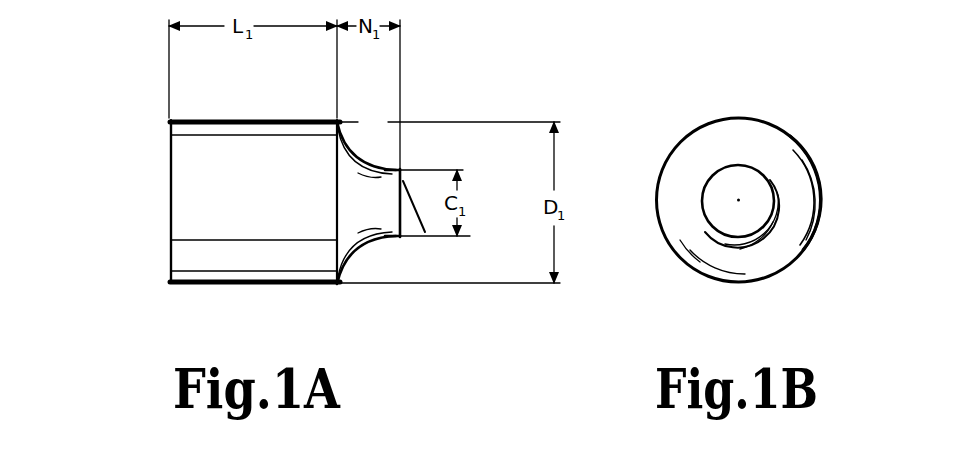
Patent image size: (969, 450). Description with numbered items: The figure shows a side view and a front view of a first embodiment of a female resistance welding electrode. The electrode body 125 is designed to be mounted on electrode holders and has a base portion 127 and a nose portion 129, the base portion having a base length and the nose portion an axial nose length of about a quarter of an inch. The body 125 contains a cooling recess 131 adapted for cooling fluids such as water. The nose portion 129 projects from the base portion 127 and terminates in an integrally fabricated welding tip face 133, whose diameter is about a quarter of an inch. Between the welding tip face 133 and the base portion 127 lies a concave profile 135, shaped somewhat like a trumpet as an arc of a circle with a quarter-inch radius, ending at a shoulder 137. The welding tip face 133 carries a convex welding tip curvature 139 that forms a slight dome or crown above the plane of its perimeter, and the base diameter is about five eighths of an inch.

In FIG. 1A, the electrode body 125 is at (253, 292).
In FIG. 1B, the electrode body 125 is at (765, 110).
In FIG. 1A, the base portion 127 is at (290, 130).
In FIG. 1A, the nose portion 129 is at (365, 160).
In FIG. 1B, the nose portion 129 is at (797, 250).
In FIG. 1A, the cooling recess 131 is at (162, 257).
In FIG. 1A, the welding tip face 133 is at (432, 237).
In FIG. 1B, the welding tip face 133 is at (737, 242).
In FIG. 1A, the concave profile 135 is at (383, 251).
In FIG. 1A, the shoulder 137 is at (340, 286).
In FIG. 1A, the convex welding tip curvature 139 is at (410, 179).